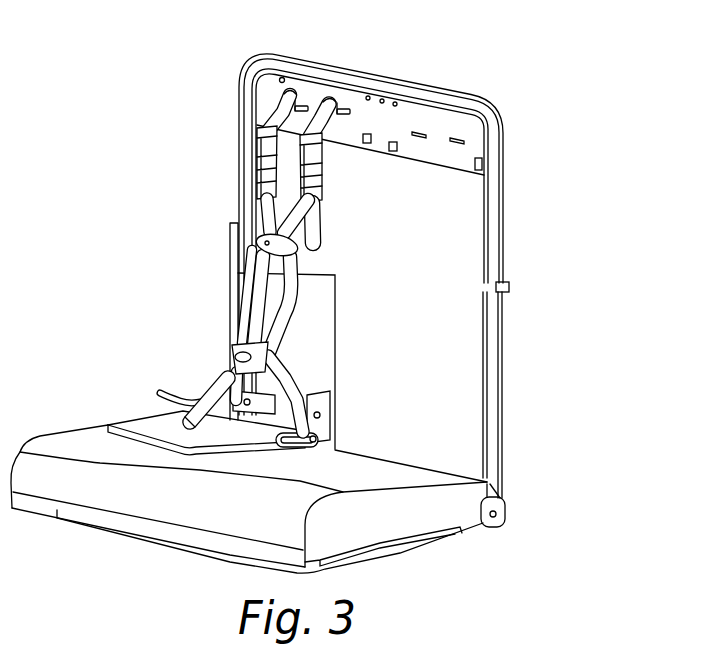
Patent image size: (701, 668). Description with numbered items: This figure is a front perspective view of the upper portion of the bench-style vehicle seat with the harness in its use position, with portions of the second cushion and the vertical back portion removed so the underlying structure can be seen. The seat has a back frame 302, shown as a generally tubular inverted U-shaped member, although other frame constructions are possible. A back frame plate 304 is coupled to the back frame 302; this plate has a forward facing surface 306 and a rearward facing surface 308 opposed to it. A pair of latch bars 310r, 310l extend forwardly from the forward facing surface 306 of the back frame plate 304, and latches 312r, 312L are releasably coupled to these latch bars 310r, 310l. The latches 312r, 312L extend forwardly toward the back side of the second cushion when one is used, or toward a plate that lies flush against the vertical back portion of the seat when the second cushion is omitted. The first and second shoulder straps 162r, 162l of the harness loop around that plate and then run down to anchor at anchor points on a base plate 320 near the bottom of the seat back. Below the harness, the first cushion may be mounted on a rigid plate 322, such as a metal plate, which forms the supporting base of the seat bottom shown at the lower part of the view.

The back frame 302 is at (503, 262).
The back frame plate 304 is at (480, 143).
The forward facing surface 306 is at (462, 127).
The rearward facing surface 308 is at (512, 108).
The latch bar 310r is at (302, 106).
The latch bar 310l is at (348, 113).
The latch 312r is at (267, 118).
The latch 312L is at (325, 144).
The first shoulder strap 162r is at (257, 304).
The second shoulder strap 162l is at (280, 315).
The base plate 320 is at (327, 431).
The rigid plate 322 is at (106, 443).